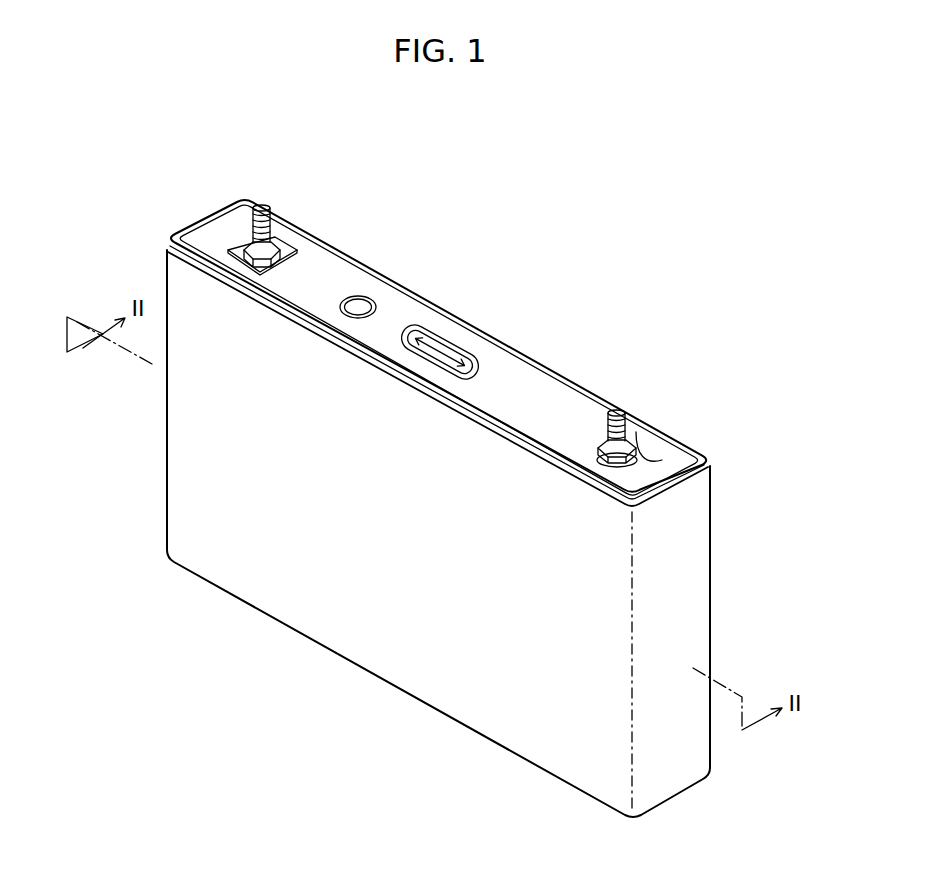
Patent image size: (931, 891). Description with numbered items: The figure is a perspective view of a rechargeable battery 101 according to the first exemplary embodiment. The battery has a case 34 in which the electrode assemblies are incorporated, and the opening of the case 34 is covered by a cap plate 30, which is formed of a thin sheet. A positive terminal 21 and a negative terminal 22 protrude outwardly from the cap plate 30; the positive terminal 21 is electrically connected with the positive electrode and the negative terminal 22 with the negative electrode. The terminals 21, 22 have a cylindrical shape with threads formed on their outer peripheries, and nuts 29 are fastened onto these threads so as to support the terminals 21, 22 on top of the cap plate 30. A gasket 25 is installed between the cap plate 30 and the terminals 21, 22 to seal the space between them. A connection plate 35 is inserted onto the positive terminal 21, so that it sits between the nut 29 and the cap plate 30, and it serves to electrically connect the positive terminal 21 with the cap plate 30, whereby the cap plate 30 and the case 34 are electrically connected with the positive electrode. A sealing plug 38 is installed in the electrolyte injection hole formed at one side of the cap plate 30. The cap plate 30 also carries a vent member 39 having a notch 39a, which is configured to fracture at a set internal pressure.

The rechargeable battery 101 is at (441, 489).
The positive terminal 21 is at (238, 218).
The negative terminal 22 is at (656, 413).
The gasket 25 is at (657, 463).
The nut 29 is at (637, 430).
The cap plate 30 is at (317, 258).
The case 34 is at (376, 655).
The connection plate 35 is at (236, 252).
The sealing plug 38 is at (358, 301).
The vent member 39 is at (460, 324).
The notch 39a is at (451, 350).